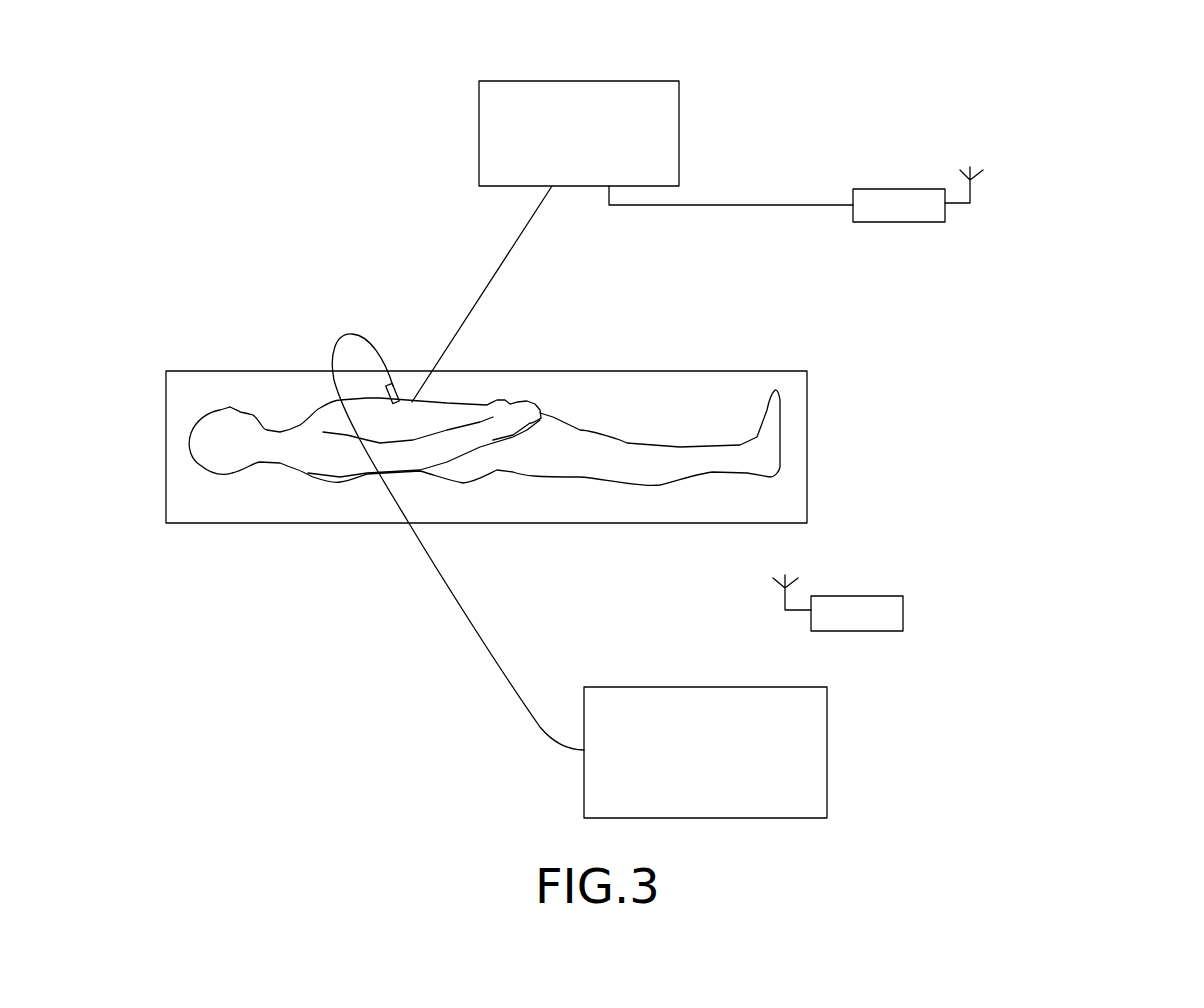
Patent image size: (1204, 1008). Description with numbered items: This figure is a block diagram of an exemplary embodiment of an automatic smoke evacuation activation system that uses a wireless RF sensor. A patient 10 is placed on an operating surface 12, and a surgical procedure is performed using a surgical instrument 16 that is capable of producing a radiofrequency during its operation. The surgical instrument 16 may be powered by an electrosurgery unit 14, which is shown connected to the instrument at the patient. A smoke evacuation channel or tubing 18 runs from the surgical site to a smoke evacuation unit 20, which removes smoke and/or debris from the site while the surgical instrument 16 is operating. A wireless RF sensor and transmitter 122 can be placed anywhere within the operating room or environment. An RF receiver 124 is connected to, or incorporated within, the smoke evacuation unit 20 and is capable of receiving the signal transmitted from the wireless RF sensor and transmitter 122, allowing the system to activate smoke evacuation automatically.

The patient 10 is at (288, 463).
The operating surface 12 is at (800, 470).
The electrosurgery unit 14 is at (812, 738).
The surgical instrument 16 is at (395, 390).
The smoke evacuation channel or tubing 18 is at (500, 256).
The smoke evacuation unit 20 is at (585, 90).
The wireless RF sensor and transmitter 122 is at (867, 622).
The RF receiver 124 is at (889, 203).